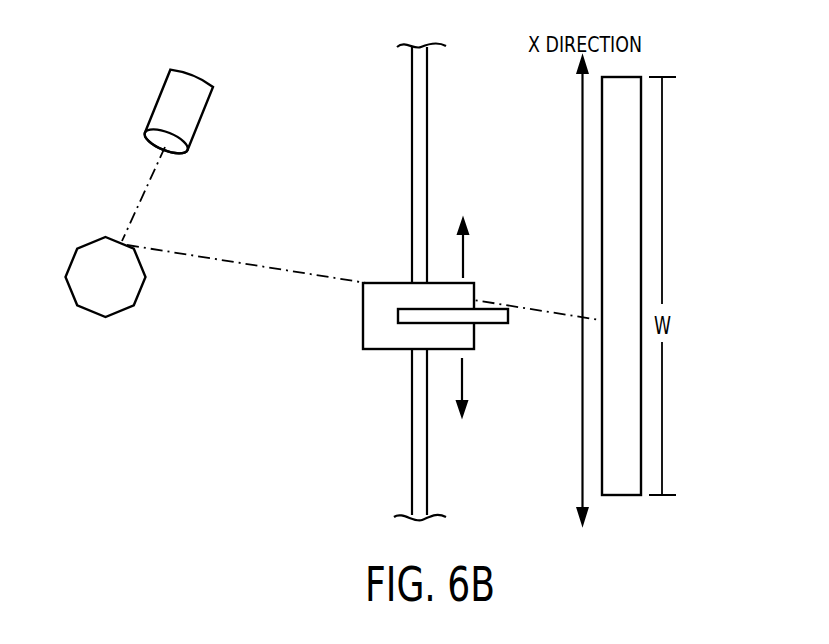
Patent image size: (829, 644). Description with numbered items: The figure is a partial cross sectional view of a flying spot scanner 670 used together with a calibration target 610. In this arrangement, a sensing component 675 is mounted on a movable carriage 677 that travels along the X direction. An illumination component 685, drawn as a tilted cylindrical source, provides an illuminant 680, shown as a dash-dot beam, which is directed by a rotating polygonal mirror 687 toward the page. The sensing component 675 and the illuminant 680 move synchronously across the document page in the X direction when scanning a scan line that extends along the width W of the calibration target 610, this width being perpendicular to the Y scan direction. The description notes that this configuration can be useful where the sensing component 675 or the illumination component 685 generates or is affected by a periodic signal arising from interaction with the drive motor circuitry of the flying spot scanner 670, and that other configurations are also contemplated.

The flying spot scanner 670 is at (333, 85).
The illumination component 685 is at (206, 112).
The rotating polygonal mirror 687 is at (87, 244).
The illuminant 680 is at (258, 262).
The movable carriage 677 is at (390, 280).
The sensing component 675 is at (502, 307).
The calibration target 610 is at (631, 76).